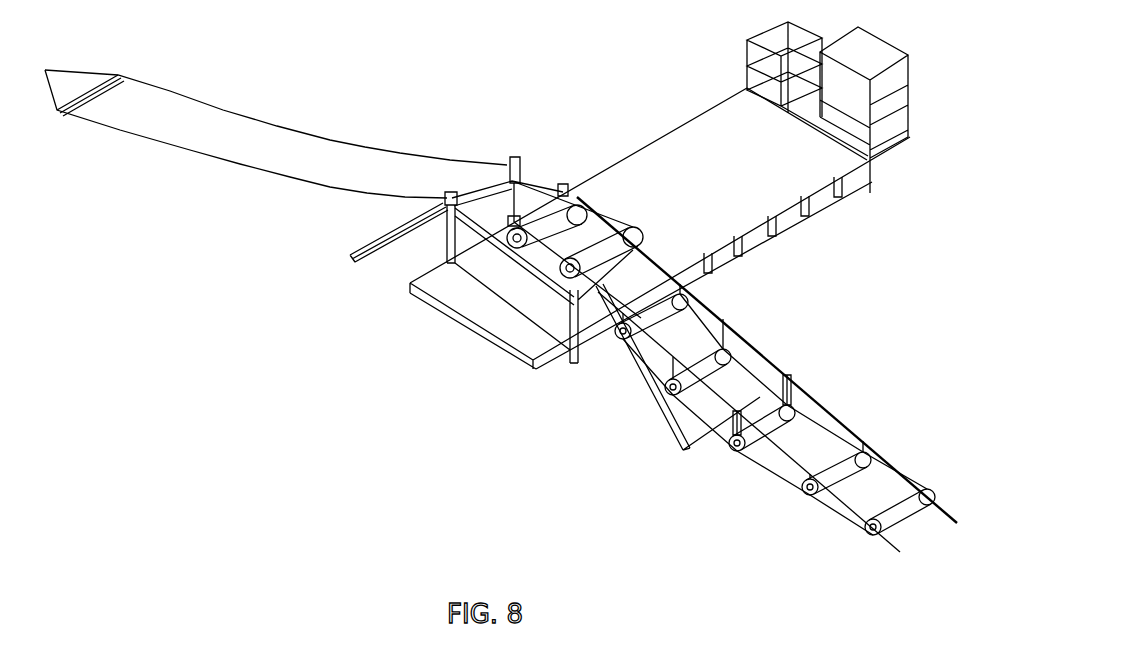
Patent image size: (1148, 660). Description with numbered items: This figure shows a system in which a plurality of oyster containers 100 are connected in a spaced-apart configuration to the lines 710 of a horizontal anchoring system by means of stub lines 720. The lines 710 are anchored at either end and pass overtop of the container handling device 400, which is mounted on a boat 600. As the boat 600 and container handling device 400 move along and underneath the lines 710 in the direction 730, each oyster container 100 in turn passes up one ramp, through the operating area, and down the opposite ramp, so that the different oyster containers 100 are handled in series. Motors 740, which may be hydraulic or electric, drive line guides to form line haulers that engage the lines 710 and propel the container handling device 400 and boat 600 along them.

The oyster container 100 is at (577, 204).
The container handling device 400 is at (397, 255).
The boat 600 is at (488, 332).
The lines 710 is at (372, 147).
The stub lines 720 is at (563, 187).
The direction 730 is at (748, 505).
The motors 740 is at (526, 172).